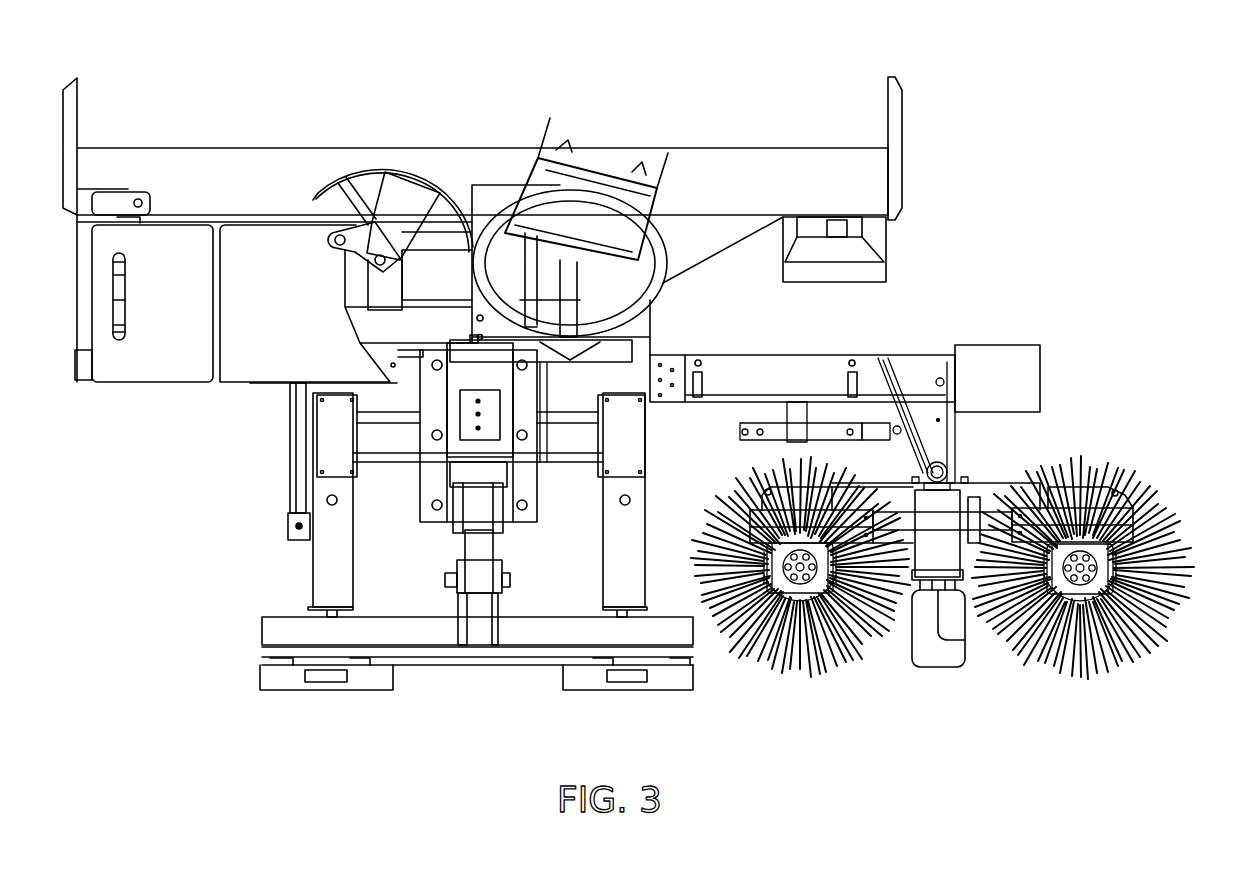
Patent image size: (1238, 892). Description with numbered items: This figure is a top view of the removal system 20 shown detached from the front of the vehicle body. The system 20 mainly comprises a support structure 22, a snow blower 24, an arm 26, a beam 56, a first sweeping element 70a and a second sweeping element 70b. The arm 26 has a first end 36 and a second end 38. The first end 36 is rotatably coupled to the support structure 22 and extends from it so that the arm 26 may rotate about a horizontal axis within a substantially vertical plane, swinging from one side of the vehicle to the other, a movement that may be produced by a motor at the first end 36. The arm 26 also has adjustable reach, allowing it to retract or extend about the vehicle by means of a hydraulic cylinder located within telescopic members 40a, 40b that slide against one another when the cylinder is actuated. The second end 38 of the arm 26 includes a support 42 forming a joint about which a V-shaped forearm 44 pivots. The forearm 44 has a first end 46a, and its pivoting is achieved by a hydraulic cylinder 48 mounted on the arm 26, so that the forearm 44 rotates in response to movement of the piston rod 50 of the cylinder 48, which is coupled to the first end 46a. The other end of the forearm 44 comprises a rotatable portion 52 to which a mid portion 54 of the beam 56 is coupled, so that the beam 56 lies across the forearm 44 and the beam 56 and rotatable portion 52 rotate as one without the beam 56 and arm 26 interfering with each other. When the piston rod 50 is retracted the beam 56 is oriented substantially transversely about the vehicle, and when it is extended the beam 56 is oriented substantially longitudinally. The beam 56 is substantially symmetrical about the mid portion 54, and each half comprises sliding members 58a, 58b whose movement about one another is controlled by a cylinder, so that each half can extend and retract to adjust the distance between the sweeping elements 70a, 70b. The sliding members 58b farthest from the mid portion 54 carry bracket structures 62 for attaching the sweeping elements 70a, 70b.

The removal system 20 is at (576, 210).
The support structure 22 is at (471, 594).
The snow blower 24 is at (482, 210).
The arm 26 is at (802, 352).
The first end 36 is at (494, 384).
The second end 38 is at (1000, 346).
The telescopic member 40a is at (587, 387).
The telescopic member 40b is at (730, 388).
The support 42 is at (942, 426).
The forearm 44 is at (903, 445).
The first end 46a is at (893, 397).
The hydraulic cylinder 48 is at (825, 430).
The piston rod 50 is at (872, 427).
The rotatable portion 52 is at (938, 552).
The mid portion 54 is at (976, 477).
The beam 56 is at (972, 469).
The sliding member 58a is at (998, 532).
The sliding member 58b is at (1127, 517).
The bracket structure 62 is at (1105, 555).
The first sweeping element 70a is at (800, 619).
The second sweeping element 70b is at (1083, 619).